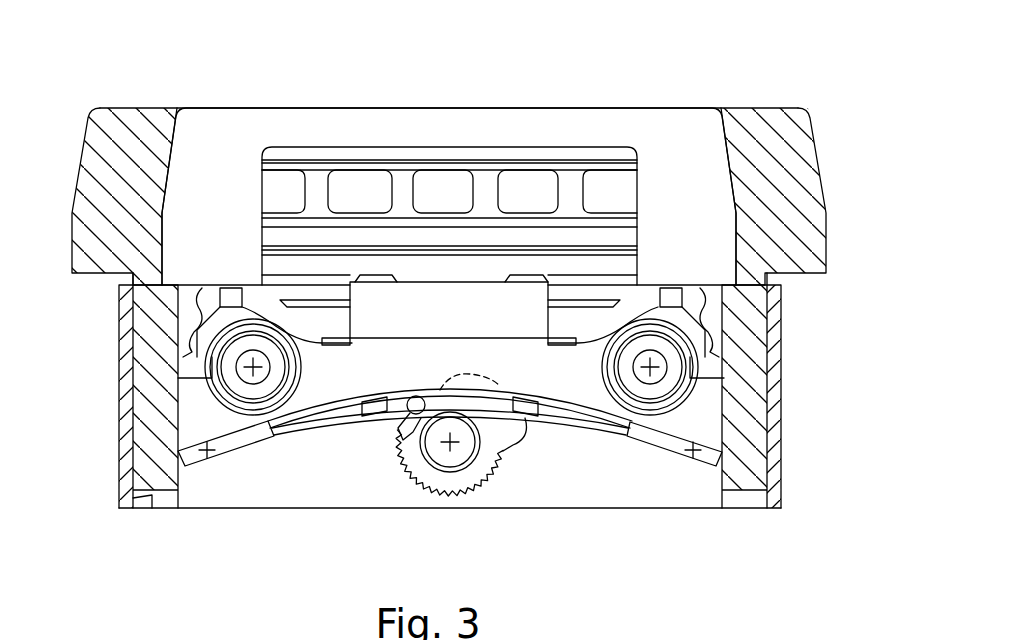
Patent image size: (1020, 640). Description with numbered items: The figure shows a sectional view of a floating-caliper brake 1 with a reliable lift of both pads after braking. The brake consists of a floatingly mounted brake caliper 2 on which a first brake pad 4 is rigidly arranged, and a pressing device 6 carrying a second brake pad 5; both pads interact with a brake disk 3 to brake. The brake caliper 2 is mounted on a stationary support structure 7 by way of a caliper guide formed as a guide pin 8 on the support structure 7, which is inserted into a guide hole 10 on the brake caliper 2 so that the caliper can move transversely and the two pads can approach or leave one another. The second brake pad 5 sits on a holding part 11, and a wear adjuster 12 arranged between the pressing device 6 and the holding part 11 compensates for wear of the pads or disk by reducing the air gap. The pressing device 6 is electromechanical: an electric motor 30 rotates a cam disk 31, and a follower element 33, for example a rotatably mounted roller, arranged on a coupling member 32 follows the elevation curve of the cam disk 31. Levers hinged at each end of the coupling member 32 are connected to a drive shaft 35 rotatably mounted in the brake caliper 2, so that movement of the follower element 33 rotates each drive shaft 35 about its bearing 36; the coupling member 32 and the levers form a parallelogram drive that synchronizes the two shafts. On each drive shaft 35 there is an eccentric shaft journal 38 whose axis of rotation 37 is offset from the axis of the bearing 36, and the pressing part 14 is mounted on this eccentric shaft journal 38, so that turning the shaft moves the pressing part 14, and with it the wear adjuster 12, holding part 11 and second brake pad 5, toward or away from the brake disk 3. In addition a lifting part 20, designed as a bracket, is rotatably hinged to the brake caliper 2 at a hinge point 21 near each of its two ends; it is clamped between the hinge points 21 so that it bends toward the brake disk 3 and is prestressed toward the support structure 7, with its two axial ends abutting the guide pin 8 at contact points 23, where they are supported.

The floating-caliper brake 1 is at (812, 64).
The brake caliper 2 is at (677, 170).
The brake disk 3 is at (398, 190).
The first brake pad 4 is at (435, 155).
The second brake pad 5 is at (449, 155).
The pressing device 6 is at (450, 478).
The support structure 7 is at (770, 170).
The guide pin 8 is at (153, 338).
The guide hole 10 is at (152, 500).
The holding part 11 is at (477, 267).
The wear adjuster 12 is at (483, 307).
The pressing part 14 is at (562, 375).
The lifting part 20 is at (615, 430).
The hinge point 21 is at (207, 446).
The contact point 23 is at (450, 501).
The electric motor 30 is at (443, 450).
The cam disk 31 is at (423, 468).
The coupling member 32 is at (313, 432).
The follower element 33 is at (408, 420).
The drive shaft 35 is at (233, 358).
The bearing 36 is at (167, 369).
The axis of rotation 37 is at (247, 372).
The eccentric shaft journal 38 is at (212, 373).